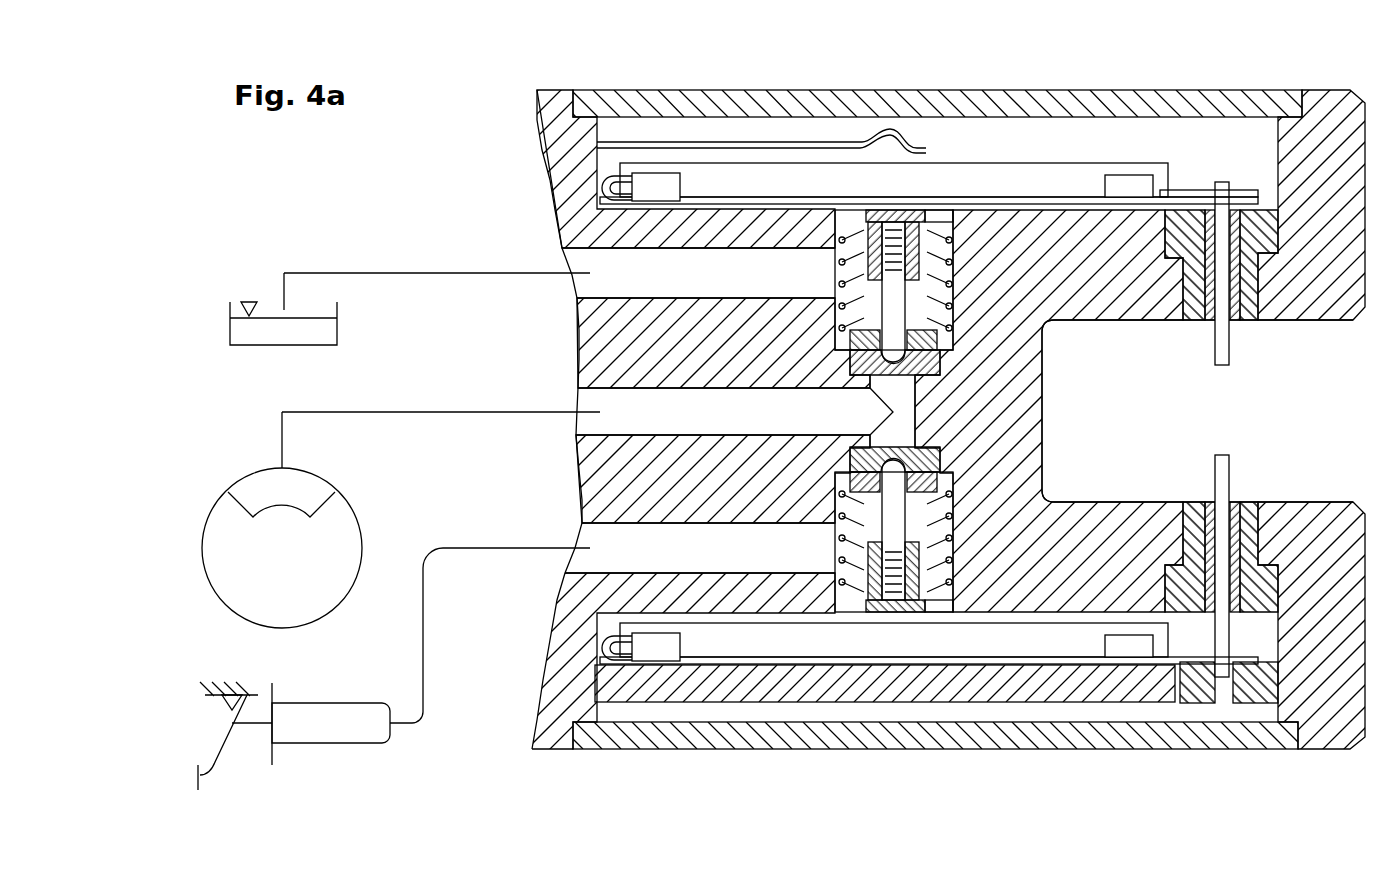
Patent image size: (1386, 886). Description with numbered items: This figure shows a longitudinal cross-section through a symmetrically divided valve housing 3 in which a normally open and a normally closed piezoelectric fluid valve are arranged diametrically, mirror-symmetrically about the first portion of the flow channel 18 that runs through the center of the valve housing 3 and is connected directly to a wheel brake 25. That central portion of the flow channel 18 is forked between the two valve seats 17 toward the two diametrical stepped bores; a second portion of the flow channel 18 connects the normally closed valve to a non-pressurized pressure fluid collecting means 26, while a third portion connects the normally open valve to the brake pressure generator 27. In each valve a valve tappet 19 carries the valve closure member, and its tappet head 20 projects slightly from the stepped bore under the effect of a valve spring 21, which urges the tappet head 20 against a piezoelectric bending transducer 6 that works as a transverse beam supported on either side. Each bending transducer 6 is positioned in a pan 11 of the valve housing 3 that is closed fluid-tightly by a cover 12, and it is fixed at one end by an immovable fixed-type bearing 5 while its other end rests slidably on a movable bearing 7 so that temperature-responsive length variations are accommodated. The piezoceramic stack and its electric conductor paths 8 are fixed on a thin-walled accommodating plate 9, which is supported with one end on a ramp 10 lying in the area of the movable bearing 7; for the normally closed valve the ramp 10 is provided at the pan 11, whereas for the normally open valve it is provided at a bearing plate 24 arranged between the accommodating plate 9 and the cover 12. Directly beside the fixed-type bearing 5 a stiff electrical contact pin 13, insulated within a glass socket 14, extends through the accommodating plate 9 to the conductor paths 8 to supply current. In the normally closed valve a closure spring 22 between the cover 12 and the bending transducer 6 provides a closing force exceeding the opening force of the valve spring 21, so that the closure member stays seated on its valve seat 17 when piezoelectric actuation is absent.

The valve housing 3 is at (1328, 160).
The fixed-type bearing 5 is at (1160, 668).
The piezoelectric bending transducer 6 is at (1085, 175).
The movable bearing 7 is at (633, 665).
The electric conductor paths 8 is at (1178, 197).
The accommodating plate 9 is at (604, 186).
The ramp 10 is at (640, 667).
The pan 11 is at (1010, 140).
The cover 12 is at (928, 107).
The contact pin 13 is at (1232, 470).
The glass socket 14 is at (1200, 290).
The valve seat 17 is at (935, 460).
The flow channel 18 is at (590, 262).
The valve tappet 19 is at (886, 287).
The tappet head 20 is at (935, 222).
The valve spring 21 is at (862, 298).
The closure spring 22 is at (818, 140).
The bearing plate 24 is at (820, 683).
The wheel brake 25 is at (213, 503).
The pressure fluid collecting means 26 is at (232, 323).
The brake pressure generator 27 is at (327, 745).